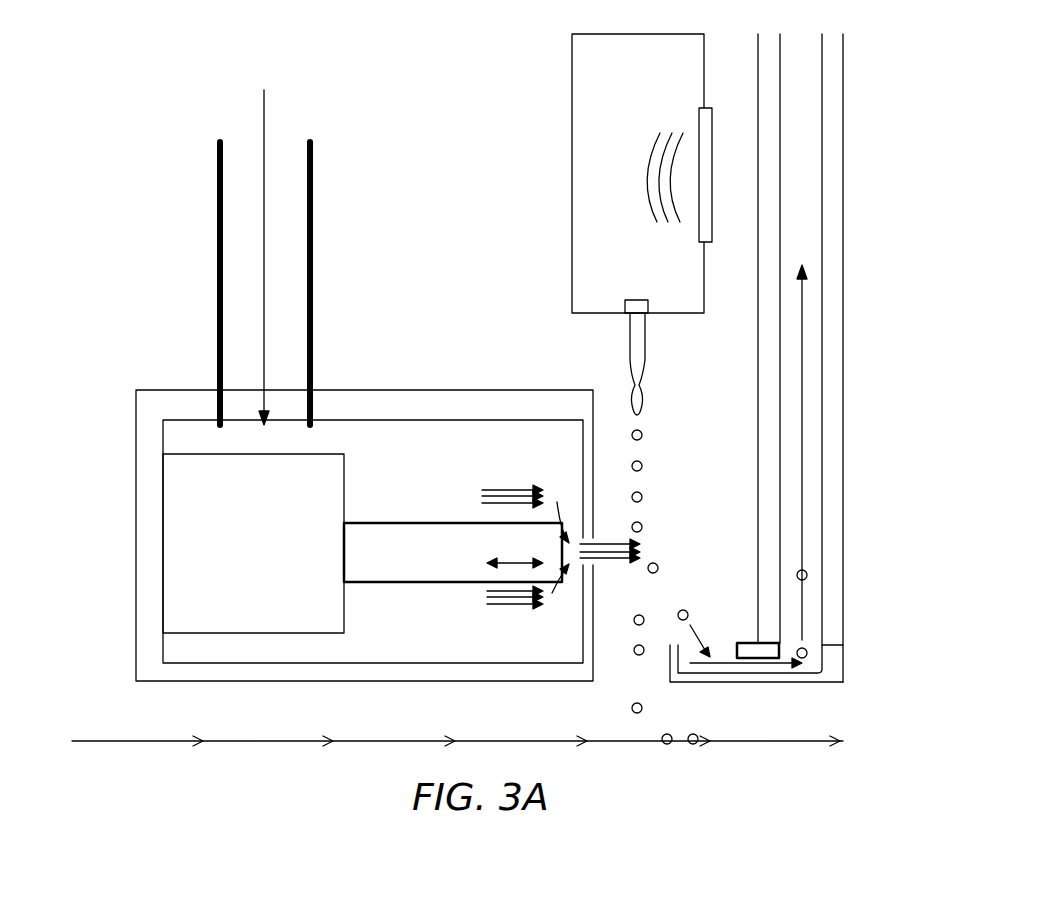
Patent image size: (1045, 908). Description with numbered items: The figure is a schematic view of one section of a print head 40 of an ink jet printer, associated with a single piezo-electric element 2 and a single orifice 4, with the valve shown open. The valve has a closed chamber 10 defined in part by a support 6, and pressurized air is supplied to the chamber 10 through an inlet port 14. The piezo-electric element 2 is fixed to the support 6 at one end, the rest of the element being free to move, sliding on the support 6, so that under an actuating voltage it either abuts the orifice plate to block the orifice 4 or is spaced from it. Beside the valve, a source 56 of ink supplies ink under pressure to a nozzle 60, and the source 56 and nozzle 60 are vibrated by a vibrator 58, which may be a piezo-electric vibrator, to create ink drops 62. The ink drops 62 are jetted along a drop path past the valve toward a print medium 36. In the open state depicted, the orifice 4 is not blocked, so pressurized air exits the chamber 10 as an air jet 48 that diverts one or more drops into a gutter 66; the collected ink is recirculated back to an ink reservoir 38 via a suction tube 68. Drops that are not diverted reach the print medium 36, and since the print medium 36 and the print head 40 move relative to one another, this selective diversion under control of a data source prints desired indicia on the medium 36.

The print head 40 is at (401, 76).
The closed chamber 10 is at (448, 435).
The inlet port 14 is at (315, 228).
The support 6 is at (345, 465).
The piezo-electric element 2 is at (440, 532).
The orifice 4 is at (596, 563).
The air jet 48 is at (643, 552).
The ink drops 62 is at (645, 466).
The source of ink 56 is at (572, 148).
The vibrator 58 is at (707, 243).
The nozzle 60 is at (630, 328).
The suction tube 68 is at (758, 398).
The ink reservoir 38 is at (803, 305).
The gutter 66 is at (748, 643).
The print medium 36 is at (778, 740).